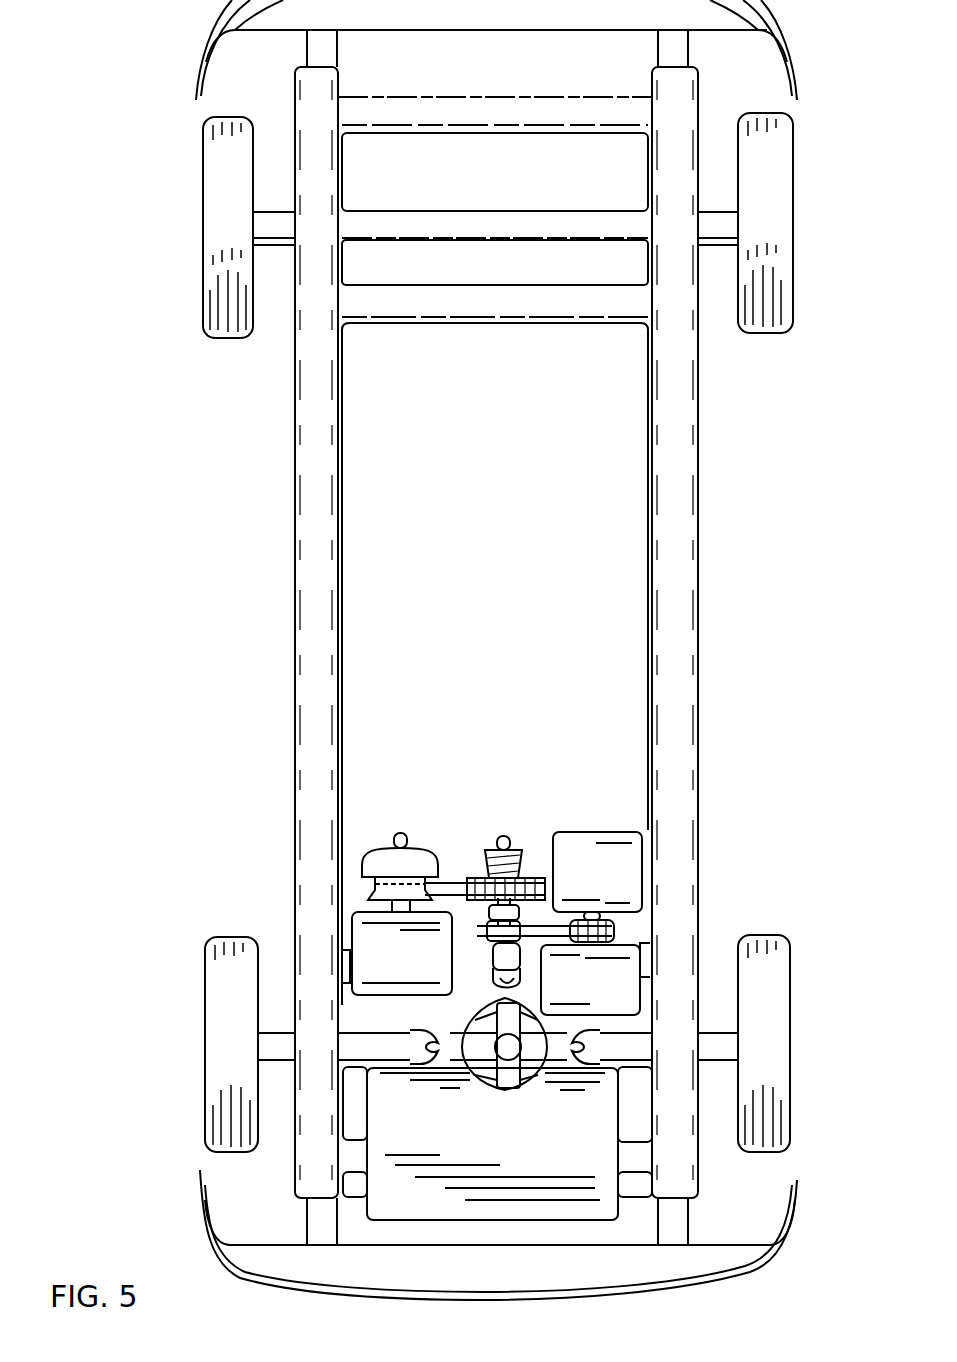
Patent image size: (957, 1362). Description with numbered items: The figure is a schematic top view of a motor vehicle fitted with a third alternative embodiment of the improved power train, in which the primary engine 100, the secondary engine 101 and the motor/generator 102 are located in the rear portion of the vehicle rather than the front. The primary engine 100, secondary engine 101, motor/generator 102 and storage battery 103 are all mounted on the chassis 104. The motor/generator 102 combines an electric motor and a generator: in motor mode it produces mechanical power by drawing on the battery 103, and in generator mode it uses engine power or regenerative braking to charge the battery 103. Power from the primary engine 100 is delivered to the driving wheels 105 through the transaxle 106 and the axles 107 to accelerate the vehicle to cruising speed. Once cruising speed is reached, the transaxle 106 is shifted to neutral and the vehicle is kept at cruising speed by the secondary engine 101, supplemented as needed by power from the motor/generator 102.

The primary engine 100 is at (512, 1139).
The secondary engine 101 is at (430, 967).
The motor/generator 102 is at (614, 997).
The storage battery 103 is at (620, 892).
The chassis 104 is at (703, 573).
The driving wheels 105 is at (205, 1013).
The transaxle 106 is at (465, 1015).
The axles 107 is at (280, 1033).